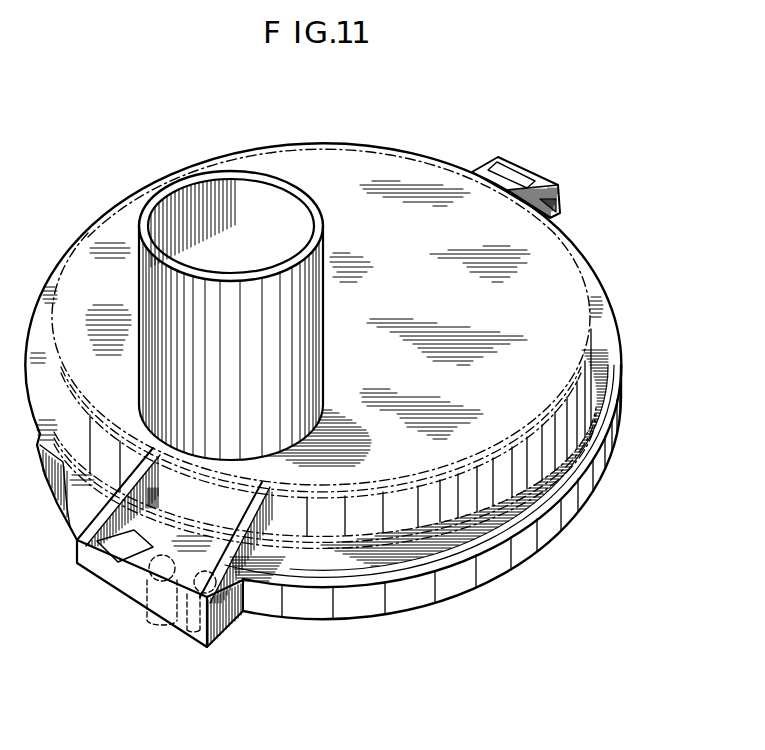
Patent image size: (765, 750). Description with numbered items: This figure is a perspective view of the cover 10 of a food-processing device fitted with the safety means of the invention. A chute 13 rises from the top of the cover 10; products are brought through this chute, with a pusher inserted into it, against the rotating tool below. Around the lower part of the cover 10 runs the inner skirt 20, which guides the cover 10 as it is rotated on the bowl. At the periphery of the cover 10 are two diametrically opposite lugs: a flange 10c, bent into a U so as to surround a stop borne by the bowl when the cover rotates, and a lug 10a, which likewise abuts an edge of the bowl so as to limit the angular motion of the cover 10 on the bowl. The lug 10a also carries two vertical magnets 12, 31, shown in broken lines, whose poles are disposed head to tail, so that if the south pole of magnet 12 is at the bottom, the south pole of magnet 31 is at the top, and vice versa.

The cover 10 is at (545, 338).
The lug 10a is at (108, 558).
The flange 10c is at (523, 168).
The magnet 12 is at (207, 610).
The chute 13 is at (290, 330).
The inner skirt 20 is at (472, 578).
The magnet 31 is at (140, 573).